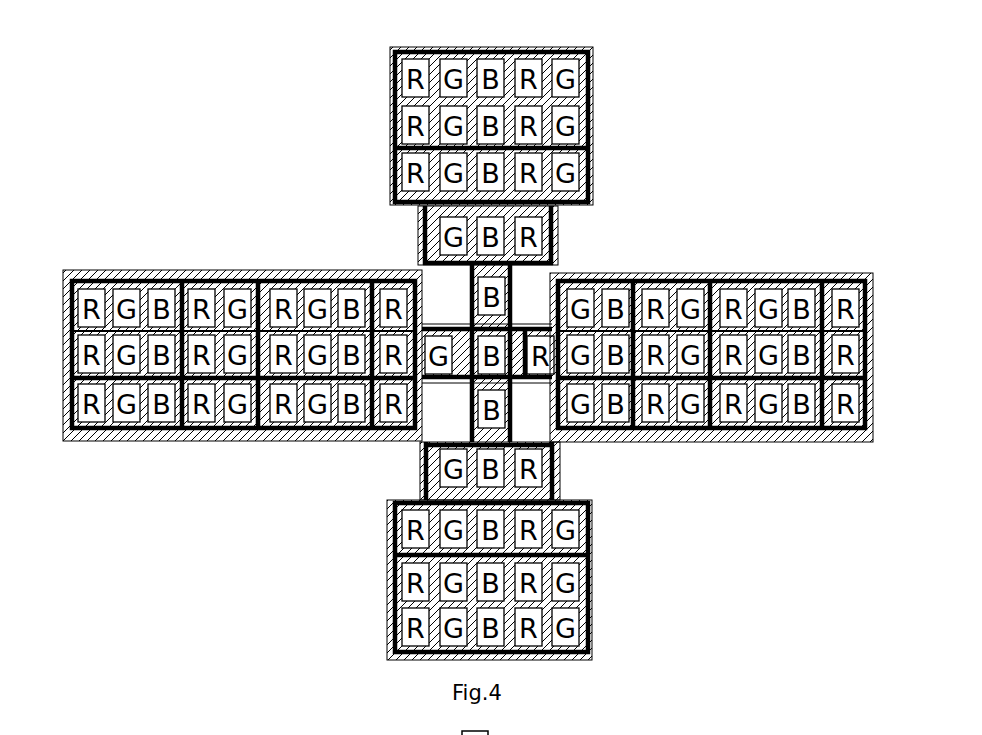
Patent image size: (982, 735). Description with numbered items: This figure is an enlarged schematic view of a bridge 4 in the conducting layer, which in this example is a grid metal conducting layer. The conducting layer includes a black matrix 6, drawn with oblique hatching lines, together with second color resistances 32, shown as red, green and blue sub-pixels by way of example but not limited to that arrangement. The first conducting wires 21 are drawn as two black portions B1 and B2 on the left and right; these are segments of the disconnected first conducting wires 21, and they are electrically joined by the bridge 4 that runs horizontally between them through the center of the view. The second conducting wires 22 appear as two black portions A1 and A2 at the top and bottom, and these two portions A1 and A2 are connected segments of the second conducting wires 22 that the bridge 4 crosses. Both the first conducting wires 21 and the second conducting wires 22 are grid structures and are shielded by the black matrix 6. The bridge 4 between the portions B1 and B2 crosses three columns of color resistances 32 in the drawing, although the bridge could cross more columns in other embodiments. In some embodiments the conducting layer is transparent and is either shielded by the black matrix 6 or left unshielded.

The second conducting wires 22 is at (595, 55).
The first conducting wires 21 is at (605, 283).
The black matrix 6 is at (655, 272).
The bridge 4 is at (453, 380).
The second color resistances 32 is at (436, 453).
The black portion of second conducting wires A1 is at (545, 111).
The black portion of second conducting wires A2 is at (592, 527).
The black portion of first conducting wires B1 is at (334, 296).
The black portion of first conducting wires B2 is at (712, 324).